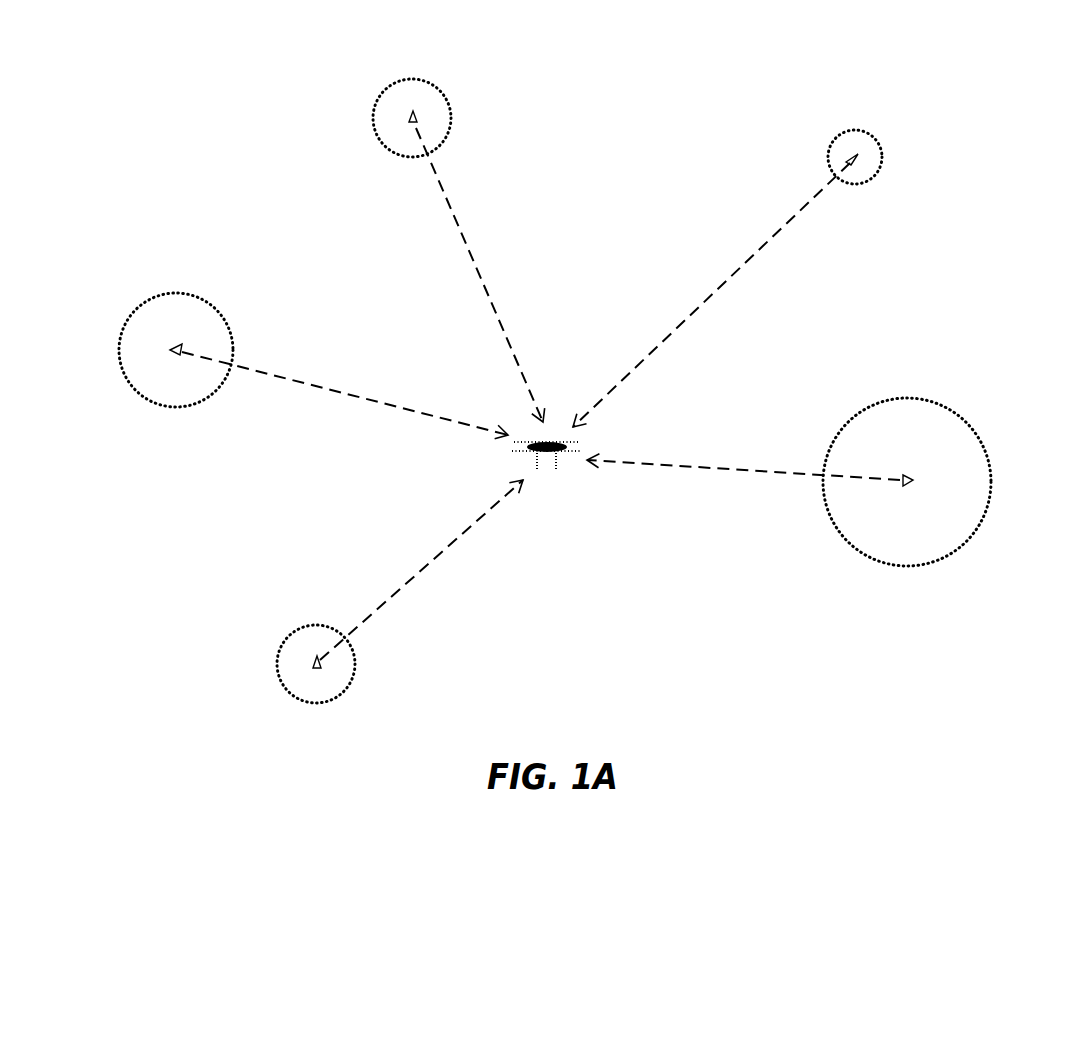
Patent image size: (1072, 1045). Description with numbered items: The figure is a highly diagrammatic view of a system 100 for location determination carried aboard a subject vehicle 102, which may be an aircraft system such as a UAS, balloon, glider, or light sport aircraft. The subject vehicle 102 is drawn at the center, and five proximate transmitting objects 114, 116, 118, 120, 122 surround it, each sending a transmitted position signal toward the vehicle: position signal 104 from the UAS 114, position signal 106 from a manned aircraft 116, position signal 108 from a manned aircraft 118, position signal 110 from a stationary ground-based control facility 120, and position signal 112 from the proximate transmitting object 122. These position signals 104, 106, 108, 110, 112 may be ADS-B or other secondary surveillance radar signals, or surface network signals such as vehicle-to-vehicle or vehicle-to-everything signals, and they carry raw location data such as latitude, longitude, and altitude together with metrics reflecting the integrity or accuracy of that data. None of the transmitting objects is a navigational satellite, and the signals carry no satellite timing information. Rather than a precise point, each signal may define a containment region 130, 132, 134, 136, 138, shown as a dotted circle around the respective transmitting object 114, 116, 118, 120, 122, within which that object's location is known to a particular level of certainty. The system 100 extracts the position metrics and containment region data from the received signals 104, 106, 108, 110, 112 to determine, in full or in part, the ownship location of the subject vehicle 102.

The system for location determination 100 is at (74, 132).
The subject vehicle 102 is at (545, 468).
The position signal 104 is at (461, 233).
The position signal 106 is at (735, 272).
The position signal 108 is at (722, 469).
The position signal 110 is at (442, 552).
The position signal 112 is at (340, 393).
The proximate transmitting object 114 is at (418, 116).
The proximate transmitting object 116 is at (851, 154).
The proximate transmitting object 118 is at (908, 484).
The proximate transmitting object 120 is at (310, 664).
The proximate transmitting object 122 is at (172, 353).
The containment region 130 is at (372, 115).
The containment region 132 is at (878, 162).
The containment region 134 is at (965, 425).
The containment region 136 is at (279, 667).
The containment region 138 is at (121, 351).